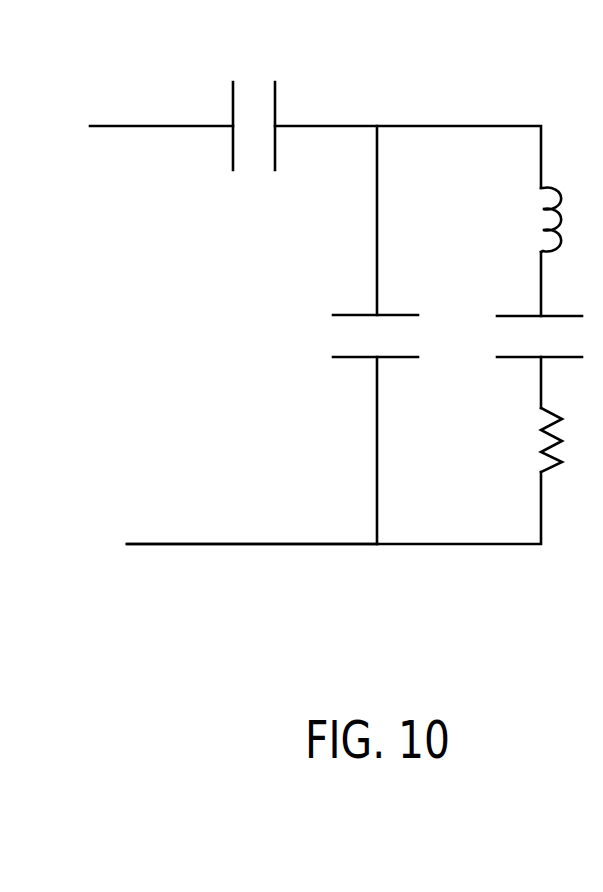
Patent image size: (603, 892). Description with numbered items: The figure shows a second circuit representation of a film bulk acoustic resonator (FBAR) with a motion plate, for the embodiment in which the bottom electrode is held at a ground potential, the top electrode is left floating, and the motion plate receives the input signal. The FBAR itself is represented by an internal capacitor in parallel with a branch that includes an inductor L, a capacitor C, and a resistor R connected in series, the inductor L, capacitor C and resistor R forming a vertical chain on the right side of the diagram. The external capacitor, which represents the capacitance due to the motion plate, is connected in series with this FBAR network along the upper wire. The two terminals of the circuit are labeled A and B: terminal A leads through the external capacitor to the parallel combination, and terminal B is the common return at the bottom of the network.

The terminal A is at (147, 123).
The terminal B is at (233, 540).
The inductor L is at (532, 220).
The capacitor C is at (539, 316).
The resistor R is at (531, 440).